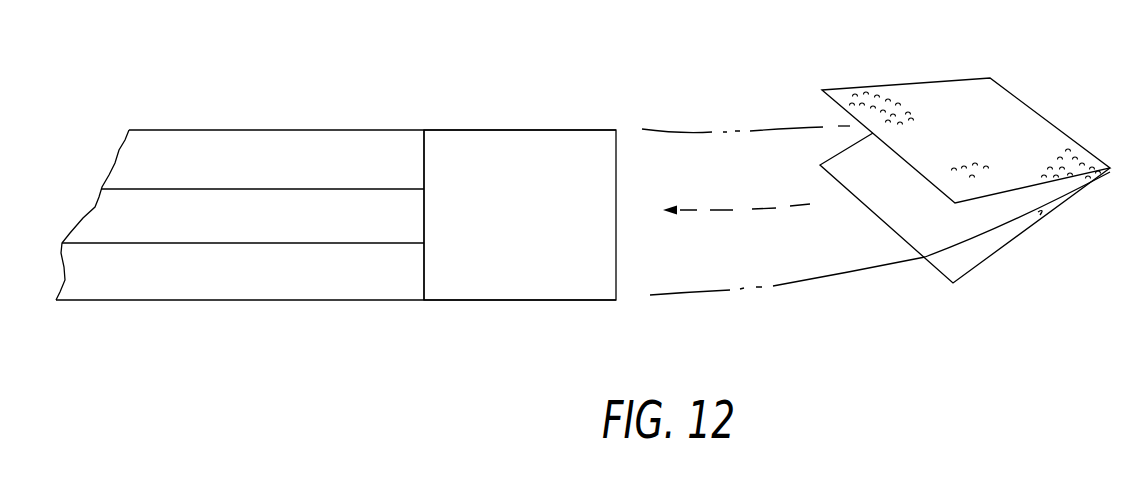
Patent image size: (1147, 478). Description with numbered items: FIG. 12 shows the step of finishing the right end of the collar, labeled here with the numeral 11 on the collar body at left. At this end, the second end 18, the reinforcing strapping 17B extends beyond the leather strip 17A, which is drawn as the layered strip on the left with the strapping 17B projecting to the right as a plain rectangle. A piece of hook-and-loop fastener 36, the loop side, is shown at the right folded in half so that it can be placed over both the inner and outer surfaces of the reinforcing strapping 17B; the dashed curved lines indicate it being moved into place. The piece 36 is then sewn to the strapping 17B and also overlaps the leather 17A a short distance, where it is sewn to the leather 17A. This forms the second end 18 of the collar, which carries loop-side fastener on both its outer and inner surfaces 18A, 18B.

The bag body 11 is at (193, 108).
The leather strip 17A is at (336, 147).
The reinforcing strapping 17B is at (512, 150).
The second end 18 is at (821, 225).
The outer surface 18A is at (997, 255).
The inner surface 18B is at (853, 88).
The hook-and-loop fastener piece 36 is at (1023, 139).